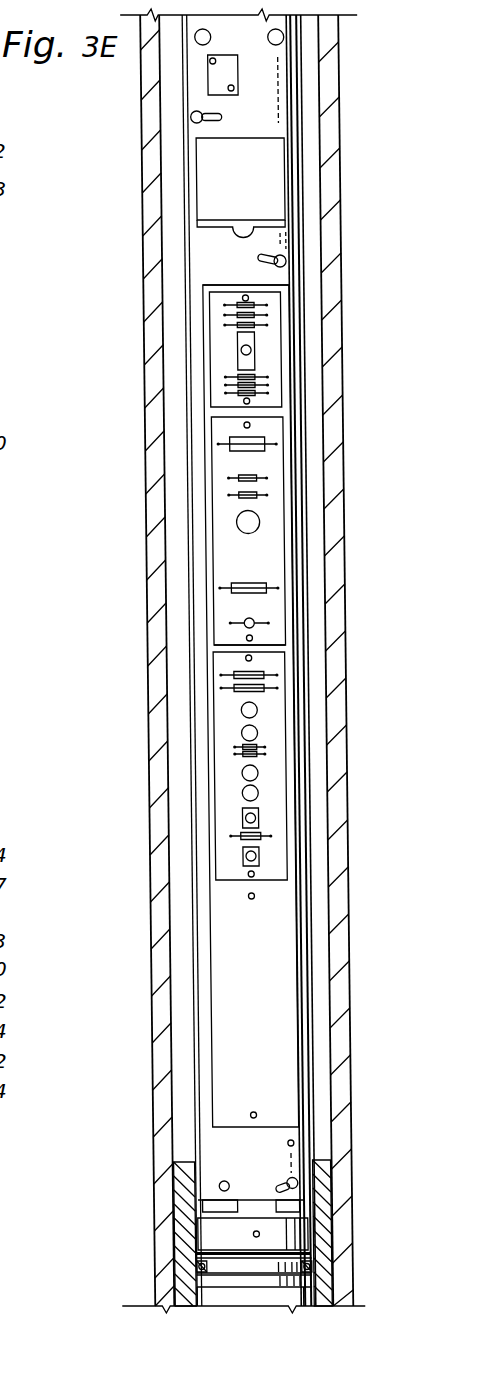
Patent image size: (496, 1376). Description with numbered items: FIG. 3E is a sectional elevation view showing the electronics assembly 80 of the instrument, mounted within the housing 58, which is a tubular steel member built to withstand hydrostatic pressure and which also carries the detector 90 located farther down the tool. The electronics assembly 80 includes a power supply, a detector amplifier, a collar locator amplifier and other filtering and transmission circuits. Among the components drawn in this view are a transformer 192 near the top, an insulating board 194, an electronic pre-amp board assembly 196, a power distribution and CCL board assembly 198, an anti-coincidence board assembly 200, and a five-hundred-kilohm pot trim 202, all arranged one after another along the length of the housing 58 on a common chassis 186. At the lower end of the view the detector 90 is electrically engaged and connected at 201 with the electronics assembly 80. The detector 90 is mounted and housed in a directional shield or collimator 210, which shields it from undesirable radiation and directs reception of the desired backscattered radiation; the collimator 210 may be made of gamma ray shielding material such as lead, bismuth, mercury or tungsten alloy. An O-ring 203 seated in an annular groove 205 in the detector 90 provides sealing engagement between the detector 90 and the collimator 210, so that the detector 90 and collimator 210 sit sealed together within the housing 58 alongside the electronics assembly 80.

The housing 58 is at (141, 372).
The electronics assembly 80 is at (200, 400).
The detector 90 is at (202, 1293).
The chassis frame 186 is at (202, 640).
The transformer 192 is at (265, 180).
The insulating board 194 is at (290, 298).
The electronic pre-amp board assembly 196 is at (263, 347).
The power distribution and CCL board assembly 198 is at (257, 545).
The anti-coincidence board assembly 200 is at (265, 733).
The electrical connection 201 is at (289, 1217).
The pot trim 500K 202 is at (227, 72).
The O-ring 203 is at (295, 1268).
The annular groove 205 is at (208, 1270).
The directional shield or collimator 210 is at (302, 1295).